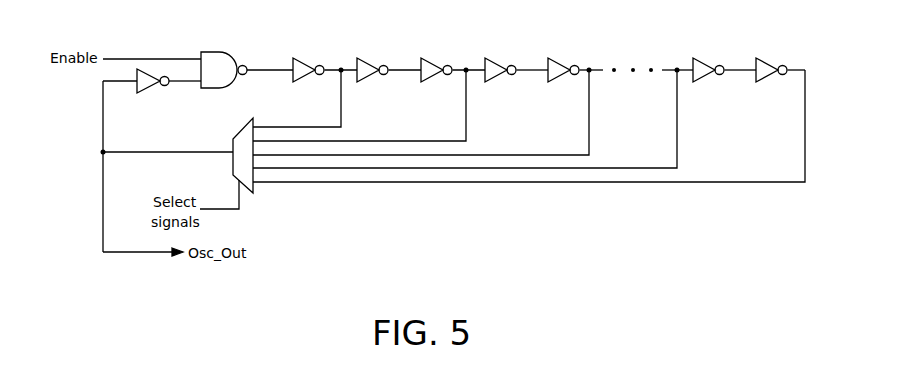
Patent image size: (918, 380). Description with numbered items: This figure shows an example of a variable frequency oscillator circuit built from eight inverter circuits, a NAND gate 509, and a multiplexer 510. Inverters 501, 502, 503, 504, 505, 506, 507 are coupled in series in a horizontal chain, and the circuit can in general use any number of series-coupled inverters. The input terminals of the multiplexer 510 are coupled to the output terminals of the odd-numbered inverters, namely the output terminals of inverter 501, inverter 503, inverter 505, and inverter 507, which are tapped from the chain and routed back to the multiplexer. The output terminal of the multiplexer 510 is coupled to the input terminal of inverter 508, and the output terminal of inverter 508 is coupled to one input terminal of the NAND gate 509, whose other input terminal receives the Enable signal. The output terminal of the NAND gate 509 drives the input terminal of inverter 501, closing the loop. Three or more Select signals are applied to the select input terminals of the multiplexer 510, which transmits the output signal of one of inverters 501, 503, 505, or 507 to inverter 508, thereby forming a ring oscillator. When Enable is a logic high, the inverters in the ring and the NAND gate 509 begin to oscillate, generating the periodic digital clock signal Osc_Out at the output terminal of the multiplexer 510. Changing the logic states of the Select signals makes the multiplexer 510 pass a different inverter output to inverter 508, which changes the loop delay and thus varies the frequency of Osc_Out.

The inverter circuit 501 is at (300, 58).
The inverter circuit 502 is at (364, 58).
The inverter circuit 503 is at (428, 58).
The inverter circuit 504 is at (492, 58).
The inverter circuit 505 is at (555, 58).
The inverter circuit 506 is at (700, 58).
The inverter circuit 507 is at (763, 58).
The inverter circuit 508 is at (146, 89).
The NAND gate 509 is at (215, 52).
The multiplexer 510 is at (237, 134).